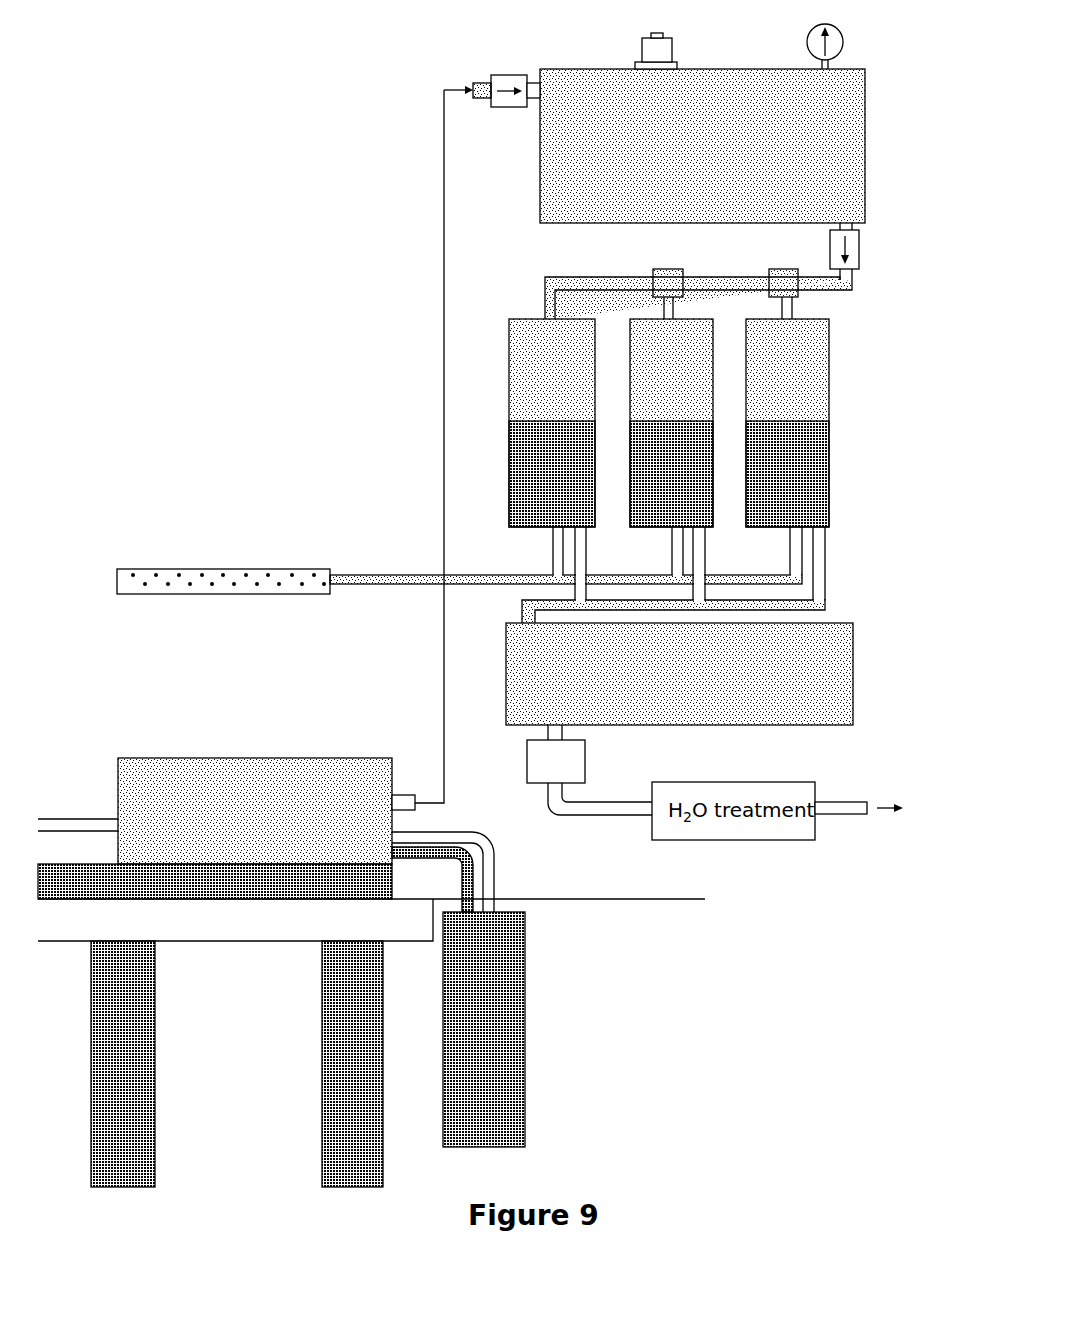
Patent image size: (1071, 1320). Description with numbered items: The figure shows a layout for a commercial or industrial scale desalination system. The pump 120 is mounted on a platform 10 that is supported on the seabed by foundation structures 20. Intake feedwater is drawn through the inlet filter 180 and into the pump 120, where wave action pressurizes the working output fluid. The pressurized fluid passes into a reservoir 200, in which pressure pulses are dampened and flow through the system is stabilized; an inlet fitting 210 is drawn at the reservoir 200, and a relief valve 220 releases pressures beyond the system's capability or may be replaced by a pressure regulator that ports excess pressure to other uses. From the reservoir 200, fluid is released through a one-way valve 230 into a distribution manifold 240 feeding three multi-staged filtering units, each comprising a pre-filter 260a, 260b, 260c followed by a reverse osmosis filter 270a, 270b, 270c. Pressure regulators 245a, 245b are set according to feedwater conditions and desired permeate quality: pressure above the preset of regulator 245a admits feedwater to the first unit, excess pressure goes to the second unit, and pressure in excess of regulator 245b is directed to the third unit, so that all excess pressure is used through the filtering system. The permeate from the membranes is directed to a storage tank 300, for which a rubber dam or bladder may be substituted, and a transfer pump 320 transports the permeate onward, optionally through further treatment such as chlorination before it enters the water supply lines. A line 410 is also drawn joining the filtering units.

The platform 10 is at (215, 881).
The foundation structures 20 is at (237, 1064).
The pump 120 is at (226, 811).
The inlet filter 180 is at (484, 1029).
The reservoir 200 is at (702, 123).
The inlet valve 210 is at (506, 76).
The relief valve 220 is at (676, 47).
The one-way valve 230 is at (868, 251).
The distribution manifold 240 is at (690, 286).
The pressure regulator 245a is at (787, 279).
The pressure regulator 245b is at (671, 279).
The pre-filter 260a is at (787, 423).
The pre-filter 260b is at (671, 423).
The pre-filter 260c is at (552, 423).
The reverse osmosis filter 270a is at (787, 474).
The reverse osmosis filter 270b is at (671, 474).
The reverse osmosis filter 270c is at (552, 474).
The storage tank 300 is at (679, 674).
The transfer pump 320 is at (556, 754).
The sparger/diffuser 410 is at (459, 564).